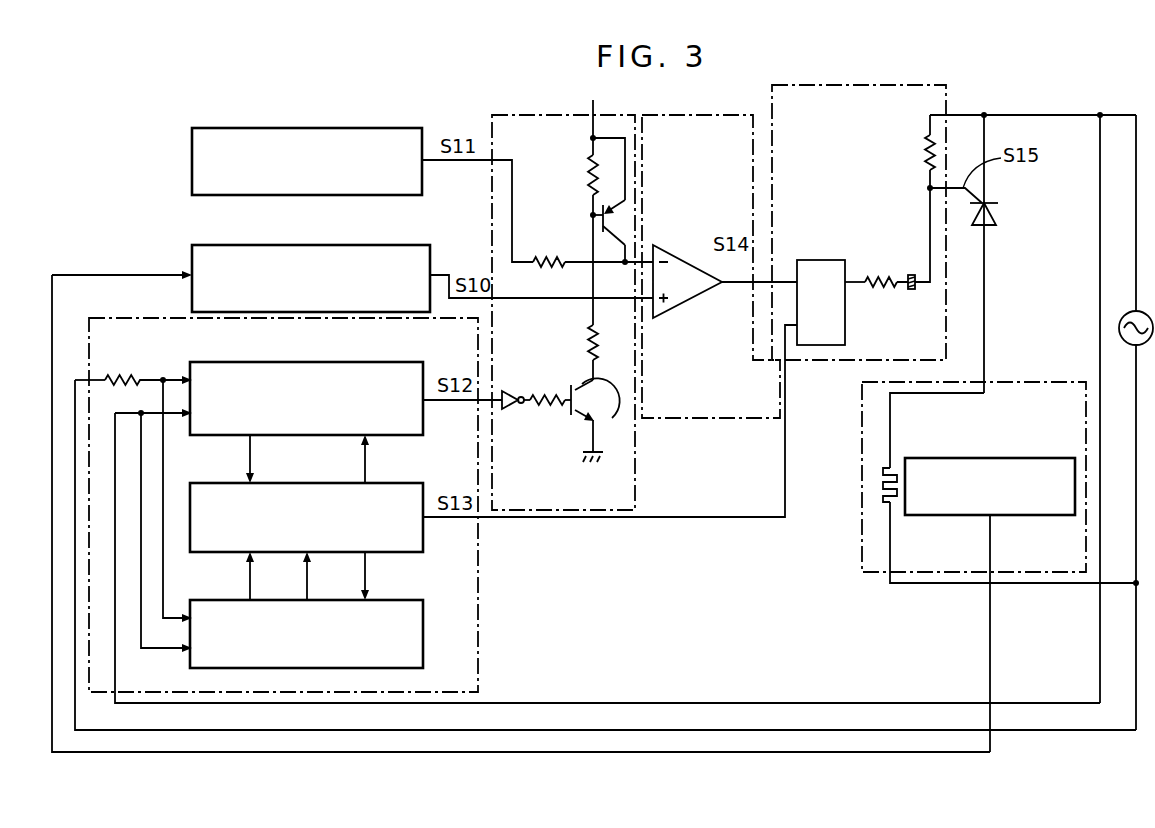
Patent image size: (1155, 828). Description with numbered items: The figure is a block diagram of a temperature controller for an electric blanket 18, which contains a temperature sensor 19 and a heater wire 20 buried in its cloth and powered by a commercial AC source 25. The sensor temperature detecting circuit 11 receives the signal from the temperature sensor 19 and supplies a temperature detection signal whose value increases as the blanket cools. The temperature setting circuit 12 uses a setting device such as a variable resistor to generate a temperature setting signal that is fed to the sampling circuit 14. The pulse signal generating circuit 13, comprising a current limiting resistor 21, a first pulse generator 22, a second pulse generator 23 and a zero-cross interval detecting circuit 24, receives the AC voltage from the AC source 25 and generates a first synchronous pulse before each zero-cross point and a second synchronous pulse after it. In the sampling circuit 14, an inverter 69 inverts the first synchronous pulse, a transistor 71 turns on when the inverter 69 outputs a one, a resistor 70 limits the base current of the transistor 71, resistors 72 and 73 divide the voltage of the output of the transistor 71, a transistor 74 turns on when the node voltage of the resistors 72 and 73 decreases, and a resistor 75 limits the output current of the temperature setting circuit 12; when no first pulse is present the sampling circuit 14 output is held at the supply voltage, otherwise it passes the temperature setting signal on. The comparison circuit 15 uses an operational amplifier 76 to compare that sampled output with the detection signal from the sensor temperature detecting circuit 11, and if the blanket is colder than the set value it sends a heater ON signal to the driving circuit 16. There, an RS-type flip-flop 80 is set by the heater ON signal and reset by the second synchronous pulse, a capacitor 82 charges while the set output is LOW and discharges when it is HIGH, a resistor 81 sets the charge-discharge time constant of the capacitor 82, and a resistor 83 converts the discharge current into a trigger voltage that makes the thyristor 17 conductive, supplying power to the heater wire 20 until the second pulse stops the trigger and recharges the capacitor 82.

The sensor temperature detecting circuit 11 is at (248, 245).
The temperature setting circuit 12 is at (245, 128).
The pulse signal generating circuit 13 is at (478, 545).
The sampling circuit 14 is at (635, 478).
The comparison circuit 15 is at (673, 418).
The driving circuit 16 is at (840, 360).
The thyristor 17 is at (998, 210).
The electric blanket 18 is at (1013, 382).
The temperature sensor 19 is at (1036, 515).
The heater wire 20 is at (882, 480).
The current limiting resistor 21 is at (122, 377).
The first pulse generator 22 is at (199, 362).
The second pulse generator 23 is at (230, 600).
The zero-cross interval detecting circuit 24 is at (223, 483).
The commercial AC source 25 is at (1122, 309).
The inverter 69 is at (509, 386).
The resistor 70 is at (547, 405).
The transistor 71 is at (612, 418).
The resistor 72 is at (588, 173).
The resistor 73 is at (590, 350).
The transistor 74 is at (618, 237).
The resistor 75 is at (569, 260).
The operational amplifier 76 is at (689, 254).
The RS-type flip-flop 80 is at (845, 328).
The resistor 81 is at (872, 292).
The capacitor 82 is at (917, 292).
The resistor 83 is at (924, 154).